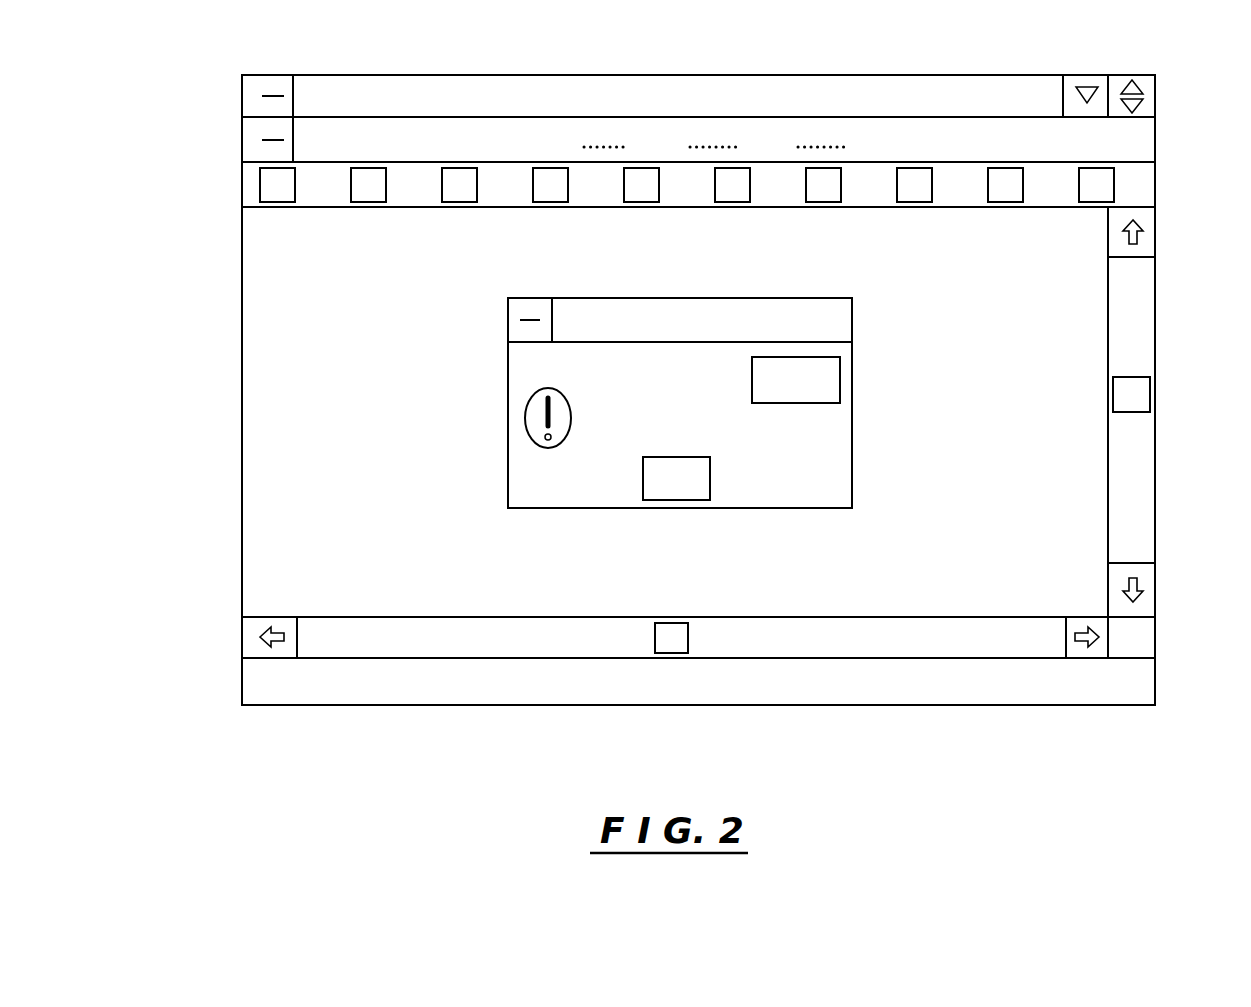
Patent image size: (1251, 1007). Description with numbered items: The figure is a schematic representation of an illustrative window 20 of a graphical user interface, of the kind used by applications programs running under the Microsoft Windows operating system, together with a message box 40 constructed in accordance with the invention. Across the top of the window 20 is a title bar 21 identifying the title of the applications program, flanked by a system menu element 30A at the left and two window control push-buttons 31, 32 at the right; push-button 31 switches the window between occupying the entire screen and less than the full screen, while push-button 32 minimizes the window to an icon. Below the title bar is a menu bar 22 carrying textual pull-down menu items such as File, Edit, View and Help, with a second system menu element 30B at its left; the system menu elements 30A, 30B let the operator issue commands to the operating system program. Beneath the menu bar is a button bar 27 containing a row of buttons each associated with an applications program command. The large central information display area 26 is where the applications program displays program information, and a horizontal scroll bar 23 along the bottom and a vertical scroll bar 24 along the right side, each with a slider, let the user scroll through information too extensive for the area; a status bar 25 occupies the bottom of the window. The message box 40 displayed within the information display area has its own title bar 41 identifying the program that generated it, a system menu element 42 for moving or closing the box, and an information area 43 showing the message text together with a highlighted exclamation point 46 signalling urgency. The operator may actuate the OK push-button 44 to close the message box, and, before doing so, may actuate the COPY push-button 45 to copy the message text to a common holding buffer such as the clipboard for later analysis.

The window 20 is at (304, 746).
The title bar 21 is at (797, 88).
The menu bar 22 is at (1157, 152).
The horizontal scroll bar 23 is at (698, 681).
The vertical scroll bar 24 is at (1177, 412).
The status bar 25 is at (1150, 678).
The information display area 26 is at (288, 504).
The button bar 27 is at (702, 188).
The system menu element 30A is at (242, 100).
The system menu element 30B is at (242, 134).
The window control push-button 31 is at (1157, 85).
The window control push-button 32 is at (1084, 74).
The message box 40 is at (503, 362).
The title bar 41 is at (746, 298).
The system menu element 42 is at (510, 320).
The information area 43 is at (598, 500).
The OK push-button 44 is at (708, 500).
The COPY push-button 45 is at (843, 384).
The highlighted exclamation point 46 is at (526, 430).